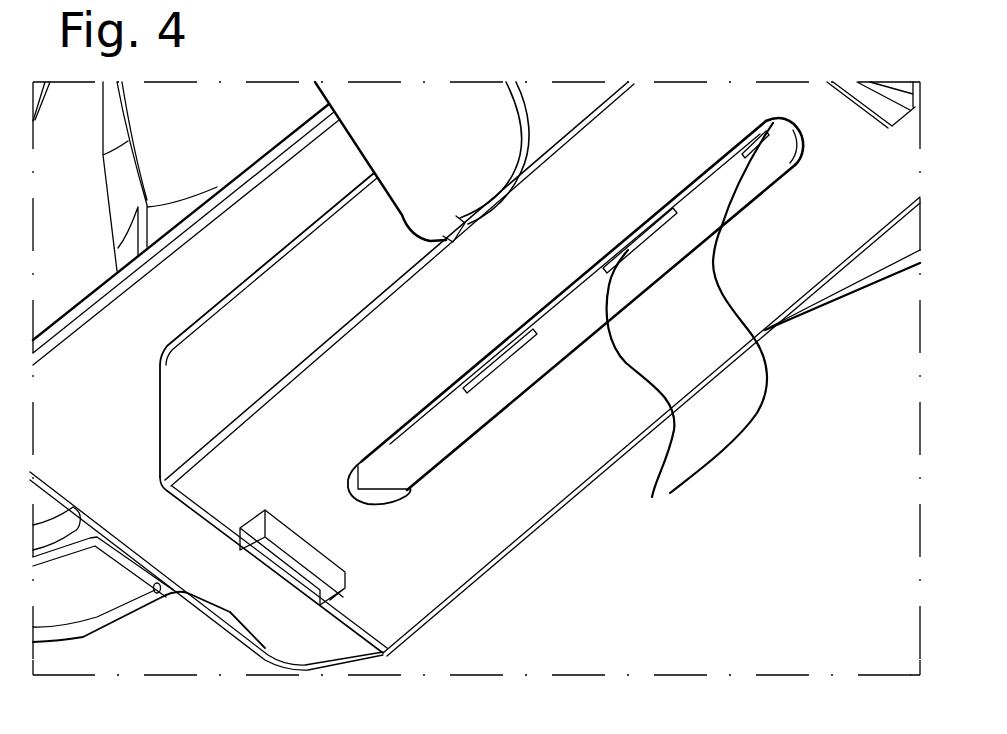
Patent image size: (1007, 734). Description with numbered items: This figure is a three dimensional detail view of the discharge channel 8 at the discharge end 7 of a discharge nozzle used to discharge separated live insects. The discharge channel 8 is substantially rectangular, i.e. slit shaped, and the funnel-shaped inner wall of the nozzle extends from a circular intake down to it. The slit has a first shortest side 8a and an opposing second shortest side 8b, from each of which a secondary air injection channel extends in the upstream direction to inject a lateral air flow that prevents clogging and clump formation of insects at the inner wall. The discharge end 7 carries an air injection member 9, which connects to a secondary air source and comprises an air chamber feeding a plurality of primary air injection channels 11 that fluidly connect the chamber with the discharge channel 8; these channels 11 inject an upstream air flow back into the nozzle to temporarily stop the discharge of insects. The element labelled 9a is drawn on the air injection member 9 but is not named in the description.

The discharge end 7 is at (228, 487).
The discharge channel 8 is at (597, 388).
The first shortest side of the discharge channel 8a is at (793, 165).
The second shortest side of the discharge channel 8b is at (405, 493).
The air injection member 9 is at (203, 395).
The tongue of channel 9a is at (440, 127).
The primary air injection channels 11 is at (690, 322).